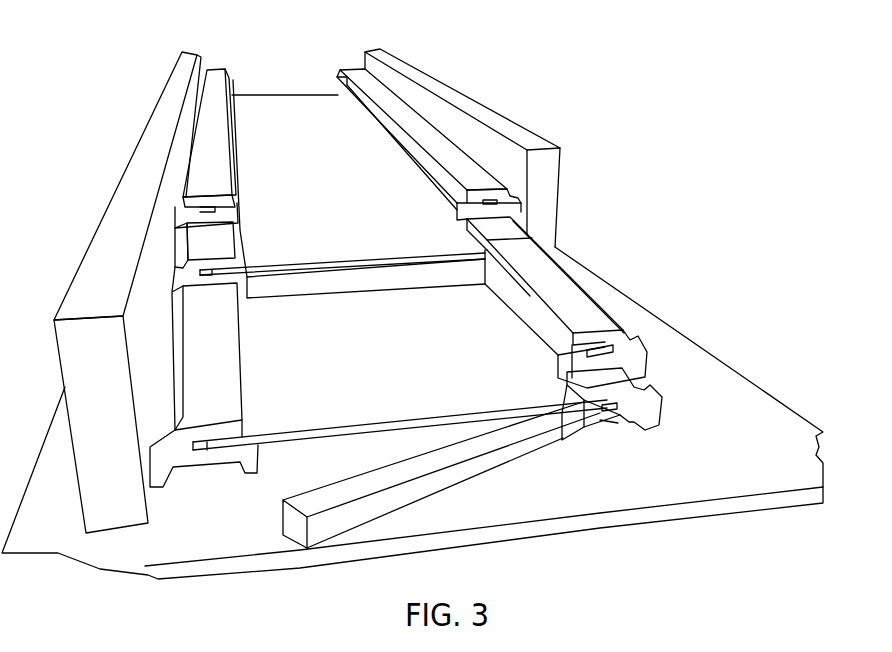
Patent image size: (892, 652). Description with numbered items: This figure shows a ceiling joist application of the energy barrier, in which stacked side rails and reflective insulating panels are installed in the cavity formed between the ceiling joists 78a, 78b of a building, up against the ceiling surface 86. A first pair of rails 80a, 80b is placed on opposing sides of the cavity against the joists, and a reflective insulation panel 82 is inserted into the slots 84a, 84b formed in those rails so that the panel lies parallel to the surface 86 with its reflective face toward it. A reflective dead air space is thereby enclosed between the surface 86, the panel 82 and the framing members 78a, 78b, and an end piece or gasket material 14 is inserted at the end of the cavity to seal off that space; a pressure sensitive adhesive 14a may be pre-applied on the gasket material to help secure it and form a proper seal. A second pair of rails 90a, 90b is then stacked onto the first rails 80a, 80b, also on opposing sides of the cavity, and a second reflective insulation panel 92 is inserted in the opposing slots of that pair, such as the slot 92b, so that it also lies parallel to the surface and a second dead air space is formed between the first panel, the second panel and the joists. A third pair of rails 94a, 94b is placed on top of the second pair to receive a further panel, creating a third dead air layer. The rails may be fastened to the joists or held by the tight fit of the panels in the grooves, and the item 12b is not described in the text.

The second rail 12b is at (522, 308).
The gasket material 14 is at (433, 327).
The pressure sensitive adhesive 14a is at (365, 483).
The ceiling joist 78a is at (117, 187).
The ceiling joist 78b is at (467, 96).
The rail 80a is at (195, 465).
The rail 80b is at (615, 423).
The reflective insulation panel 82 is at (280, 447).
The slot 84a is at (213, 450).
The slot 84b is at (623, 403).
The ceiling surface 86 is at (513, 520).
The rail 90a is at (237, 240).
The rail 90b is at (570, 282).
The reflective insulation panel 92 is at (278, 97).
The slot 92b is at (600, 357).
The rail 94a is at (217, 74).
The rail 94b is at (372, 76).